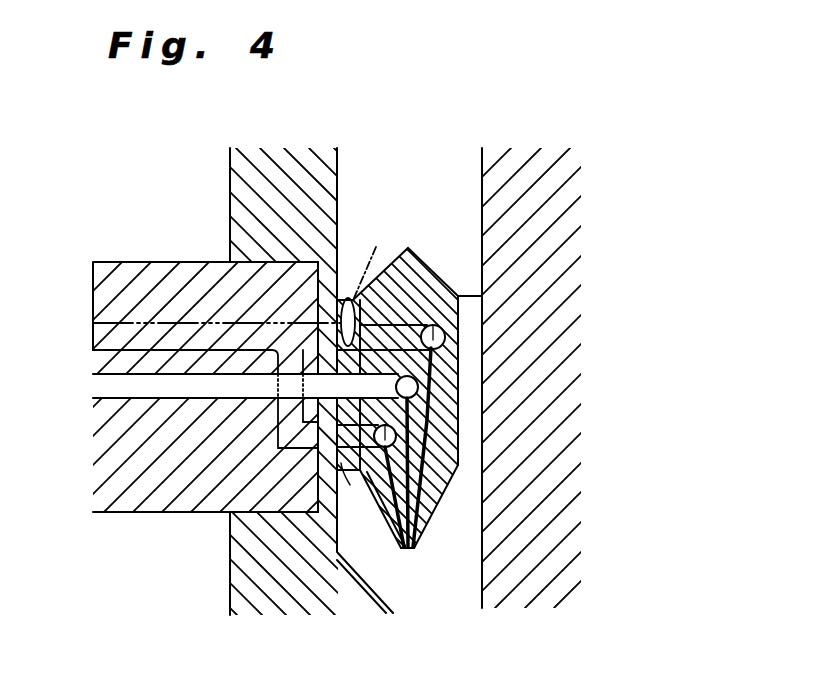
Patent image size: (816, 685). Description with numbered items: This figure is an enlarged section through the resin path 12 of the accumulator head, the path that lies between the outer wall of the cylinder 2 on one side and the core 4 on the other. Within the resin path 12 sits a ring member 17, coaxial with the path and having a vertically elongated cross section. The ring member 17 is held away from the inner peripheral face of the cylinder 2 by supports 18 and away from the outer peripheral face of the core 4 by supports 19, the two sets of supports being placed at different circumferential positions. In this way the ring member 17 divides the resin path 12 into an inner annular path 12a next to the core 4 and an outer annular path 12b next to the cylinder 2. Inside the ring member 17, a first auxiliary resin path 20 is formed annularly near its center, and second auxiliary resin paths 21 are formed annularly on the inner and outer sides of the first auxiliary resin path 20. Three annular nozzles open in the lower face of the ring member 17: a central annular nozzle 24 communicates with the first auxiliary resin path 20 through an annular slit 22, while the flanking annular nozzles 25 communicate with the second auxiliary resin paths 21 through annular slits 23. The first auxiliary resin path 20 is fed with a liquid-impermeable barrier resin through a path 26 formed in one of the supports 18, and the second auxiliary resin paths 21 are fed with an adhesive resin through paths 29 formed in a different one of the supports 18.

The cylinder 2 is at (236, 204).
The core 4 is at (545, 218).
The resin path 12 is at (413, 197).
The inner annular path 12a is at (456, 498).
The outer annular path 12b is at (354, 508).
The ring member 17 is at (474, 350).
The supports 18 is at (347, 299).
The supports 19 is at (465, 297).
The first auxiliary resin path 20 is at (458, 378).
The second auxiliary resin paths 21 is at (428, 325).
The annular slit 22 is at (442, 466).
The annular slits 23 is at (440, 430).
The annular nozzle 24 is at (410, 552).
The annular nozzles 25 is at (402, 550).
The path 26 is at (152, 376).
The paths 29 is at (372, 385).